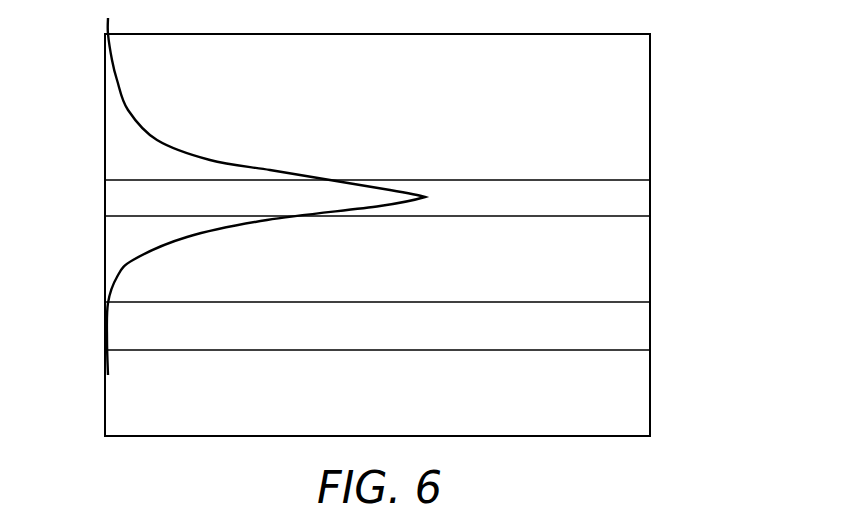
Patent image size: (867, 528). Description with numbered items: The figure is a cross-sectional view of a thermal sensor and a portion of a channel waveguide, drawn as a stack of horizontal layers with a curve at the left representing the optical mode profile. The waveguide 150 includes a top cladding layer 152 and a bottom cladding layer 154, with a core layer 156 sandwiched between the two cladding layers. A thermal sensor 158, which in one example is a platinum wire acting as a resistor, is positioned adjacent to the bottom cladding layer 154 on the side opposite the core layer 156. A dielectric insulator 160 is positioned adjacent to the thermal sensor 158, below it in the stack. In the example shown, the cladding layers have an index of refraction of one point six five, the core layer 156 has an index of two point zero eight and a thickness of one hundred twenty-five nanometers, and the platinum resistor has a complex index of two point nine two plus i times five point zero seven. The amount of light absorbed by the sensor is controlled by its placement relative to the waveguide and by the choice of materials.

The waveguide 150 is at (699, 80).
The top cladding layer 152 is at (120, 138).
The bottom cladding layer 154 is at (118, 249).
The core layer 156 is at (115, 200).
The thermal sensor 158 is at (126, 333).
The dielectric insulator 160 is at (128, 407).